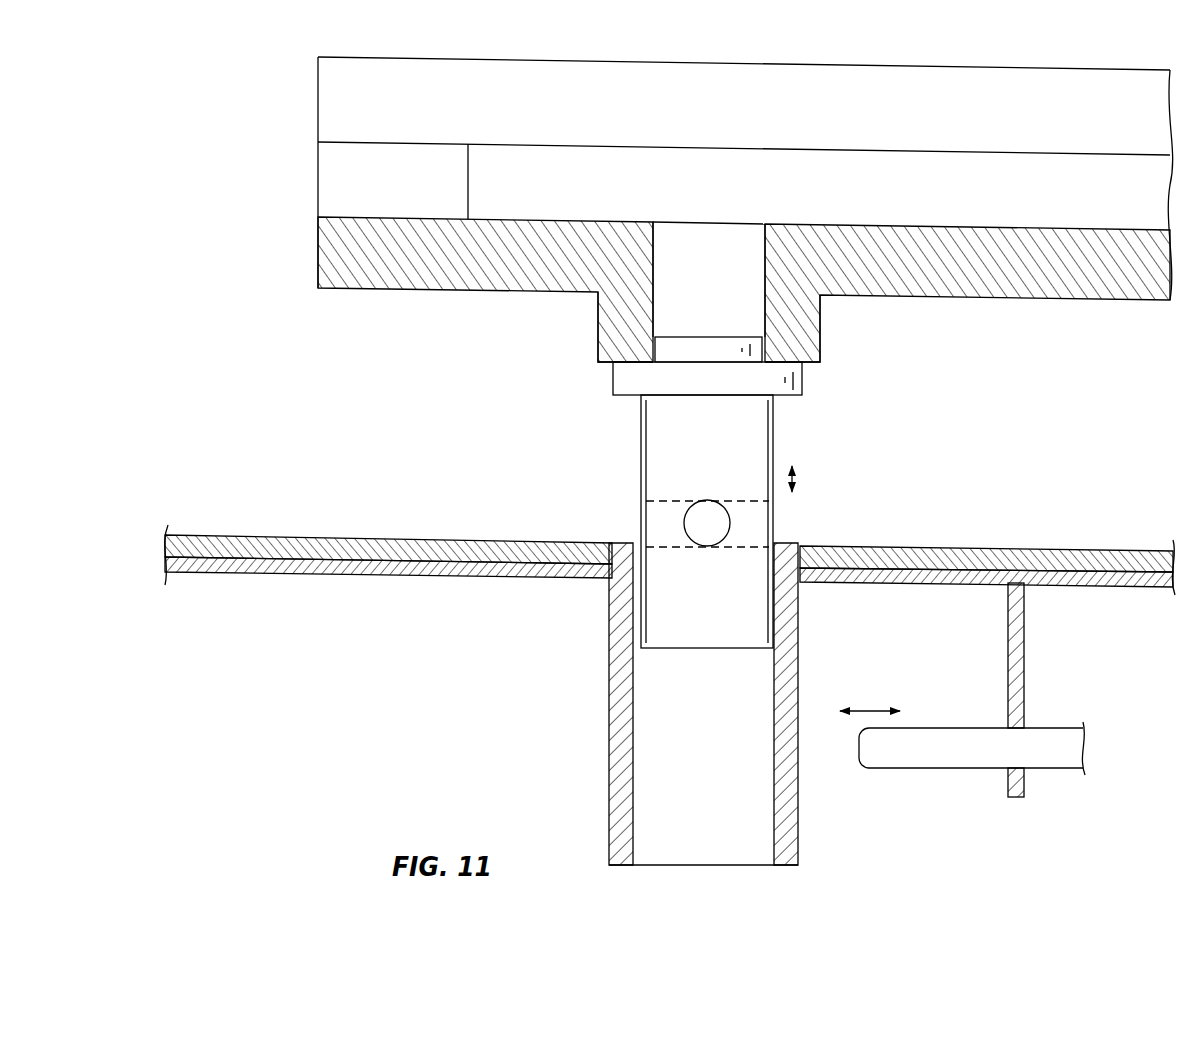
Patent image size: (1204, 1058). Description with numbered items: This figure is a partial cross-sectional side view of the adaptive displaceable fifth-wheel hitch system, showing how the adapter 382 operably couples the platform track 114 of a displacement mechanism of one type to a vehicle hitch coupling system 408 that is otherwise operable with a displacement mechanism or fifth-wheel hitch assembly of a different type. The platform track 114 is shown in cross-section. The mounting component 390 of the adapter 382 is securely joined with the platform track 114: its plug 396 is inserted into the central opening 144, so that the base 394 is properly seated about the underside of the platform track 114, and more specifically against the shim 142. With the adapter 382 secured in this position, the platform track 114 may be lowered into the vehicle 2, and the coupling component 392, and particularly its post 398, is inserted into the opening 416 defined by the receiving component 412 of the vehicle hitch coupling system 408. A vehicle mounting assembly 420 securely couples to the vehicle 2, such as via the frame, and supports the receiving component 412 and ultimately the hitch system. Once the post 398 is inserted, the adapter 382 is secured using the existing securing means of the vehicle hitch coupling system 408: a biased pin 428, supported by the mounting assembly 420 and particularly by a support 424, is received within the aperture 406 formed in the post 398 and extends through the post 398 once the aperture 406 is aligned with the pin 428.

The platform track 114 is at (446, 114).
The central opening 144 is at (711, 246).
The shim 142 is at (618, 323).
The plug 396 is at (752, 350).
The mounting component 390 is at (608, 369).
The base 394 is at (800, 378).
The adapter 382 is at (633, 406).
The post 398 is at (762, 427).
The coupling component 392 is at (633, 477).
The aperture 406 is at (790, 525).
The vehicle 2 is at (270, 543).
The vehicle mounting assembly 420 is at (383, 565).
The vehicle hitch coupling system 408 is at (585, 589).
The receiving component 412 is at (620, 660).
The opening 416 is at (660, 723).
The support 424 is at (1018, 650).
The biased pin 428 is at (922, 752).